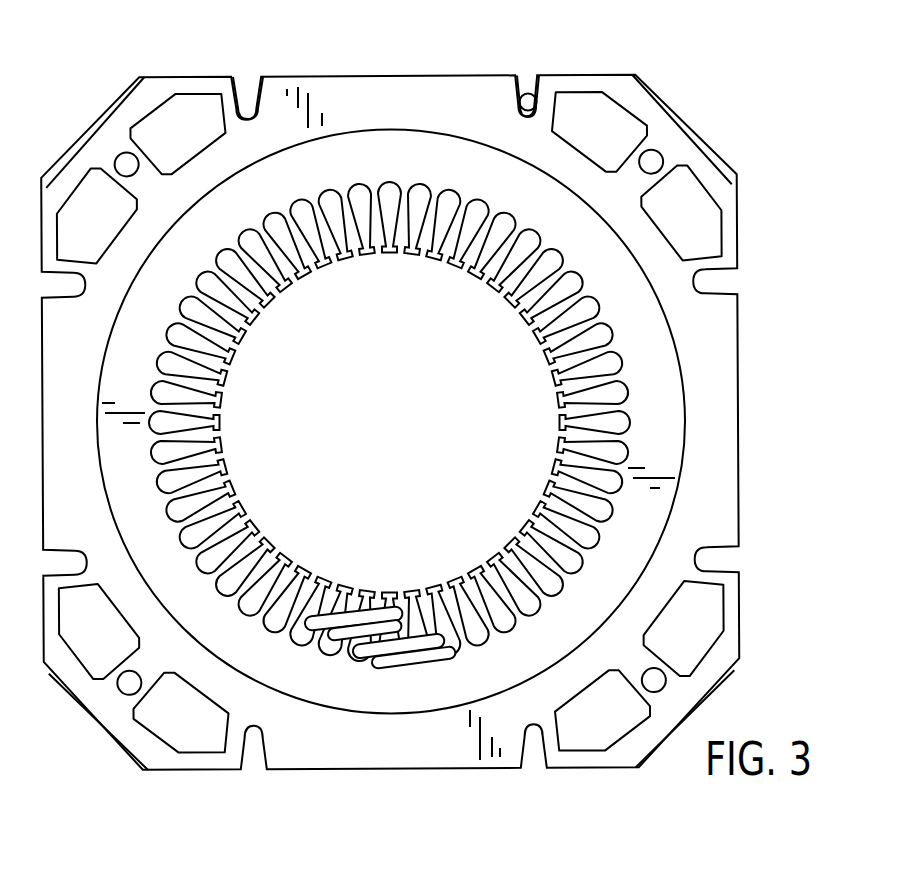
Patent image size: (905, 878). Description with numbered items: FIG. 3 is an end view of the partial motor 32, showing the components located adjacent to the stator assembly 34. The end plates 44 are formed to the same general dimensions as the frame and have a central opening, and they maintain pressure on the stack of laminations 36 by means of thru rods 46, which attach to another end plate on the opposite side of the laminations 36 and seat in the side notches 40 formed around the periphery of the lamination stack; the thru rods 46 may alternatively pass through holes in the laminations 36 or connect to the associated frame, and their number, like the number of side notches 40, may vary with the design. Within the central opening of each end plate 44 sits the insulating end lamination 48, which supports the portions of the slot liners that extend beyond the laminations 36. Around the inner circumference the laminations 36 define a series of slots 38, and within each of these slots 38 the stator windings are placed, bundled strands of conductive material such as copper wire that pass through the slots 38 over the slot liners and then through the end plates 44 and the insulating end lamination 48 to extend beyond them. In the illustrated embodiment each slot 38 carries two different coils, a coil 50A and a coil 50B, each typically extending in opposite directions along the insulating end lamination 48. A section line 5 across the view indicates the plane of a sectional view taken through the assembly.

The partial motor 32 is at (305, 36).
The stator assembly 34 is at (648, 329).
The laminations 36 is at (580, 343).
The slots 38 is at (613, 478).
The side notches 40 is at (249, 112).
The end plates 44 is at (718, 398).
The thru rods 46 is at (529, 88).
The insulating end lamination 48 is at (660, 447).
The coil 50A is at (390, 652).
The coil 50B is at (359, 630).
The section line 5 is at (705, 80).